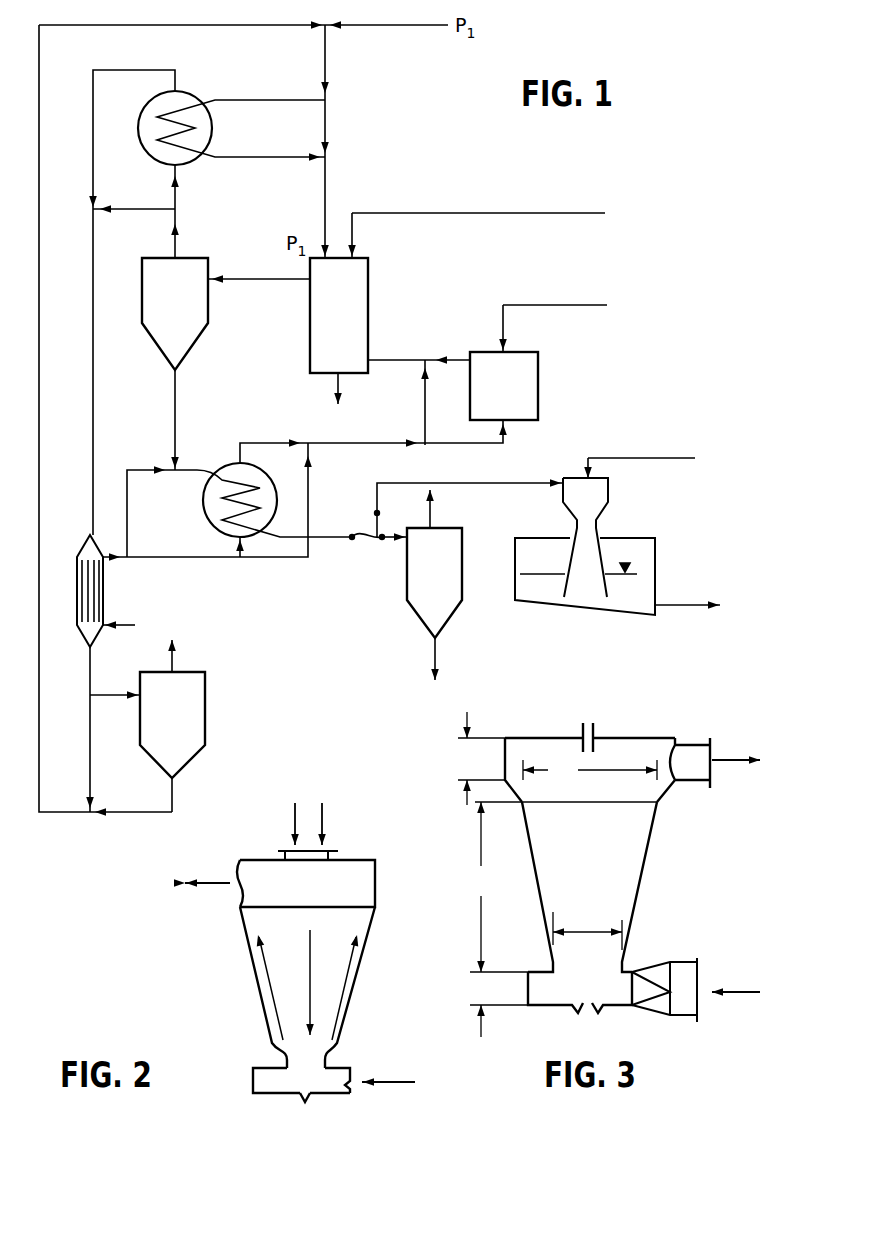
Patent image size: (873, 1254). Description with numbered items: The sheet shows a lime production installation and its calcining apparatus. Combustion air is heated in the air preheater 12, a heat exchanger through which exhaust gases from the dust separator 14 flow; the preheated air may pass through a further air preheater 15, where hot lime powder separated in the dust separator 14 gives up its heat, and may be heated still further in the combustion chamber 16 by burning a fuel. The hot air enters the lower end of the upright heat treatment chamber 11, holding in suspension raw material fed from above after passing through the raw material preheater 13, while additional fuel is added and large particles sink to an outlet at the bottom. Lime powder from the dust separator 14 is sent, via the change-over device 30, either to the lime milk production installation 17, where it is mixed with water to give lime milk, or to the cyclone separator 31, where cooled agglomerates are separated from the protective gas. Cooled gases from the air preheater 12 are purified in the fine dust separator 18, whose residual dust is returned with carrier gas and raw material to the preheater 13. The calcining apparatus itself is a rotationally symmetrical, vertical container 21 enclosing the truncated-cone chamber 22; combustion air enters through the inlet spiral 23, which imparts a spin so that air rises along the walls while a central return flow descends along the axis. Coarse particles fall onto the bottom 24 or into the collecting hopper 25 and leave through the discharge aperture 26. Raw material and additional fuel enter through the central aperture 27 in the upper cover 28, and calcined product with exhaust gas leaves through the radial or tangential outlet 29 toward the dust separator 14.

In FIG. 1, the heat treatment chamber 11 is at (377, 272).
In FIG. 1, the air preheater 12 is at (107, 578).
In FIG. 1, the raw material preheater 13 is at (199, 86).
In FIG. 1, the dust separator 14 is at (140, 270).
In FIG. 1, the further air preheater 15 is at (221, 460).
In FIG. 1, the combustion chamber 16 is at (482, 350).
In FIG. 1, the lime milk production installation 17 is at (657, 537).
In FIG. 1, the fine dust separator 18 is at (209, 699).
In FIG. 2, the container 21 is at (257, 982).
In FIG. 3, the container 21 is at (643, 887).
In FIG. 2, the chamber 22 is at (342, 961).
In FIG. 3, the chamber 22 is at (624, 866).
In FIG. 2, the inlet spiral 23 is at (352, 1090).
In FIG. 3, the inlet spiral 23 is at (555, 990).
In FIG. 2, the bottom 24 is at (253, 1100).
In FIG. 2, the collecting hopper 25 is at (312, 1095).
In FIG. 2, the discharge aperture 26 is at (308, 1103).
In FIG. 2, the central aperture 27 is at (325, 850).
In FIG. 2, the upper cover 28 is at (266, 858).
In FIG. 2, the outlet 29 is at (255, 895).
In FIG. 3, the outlet 29 is at (643, 745).
In FIG. 1, the change-over device 30 is at (362, 541).
In FIG. 1, the cyclone separator 31 is at (403, 600).